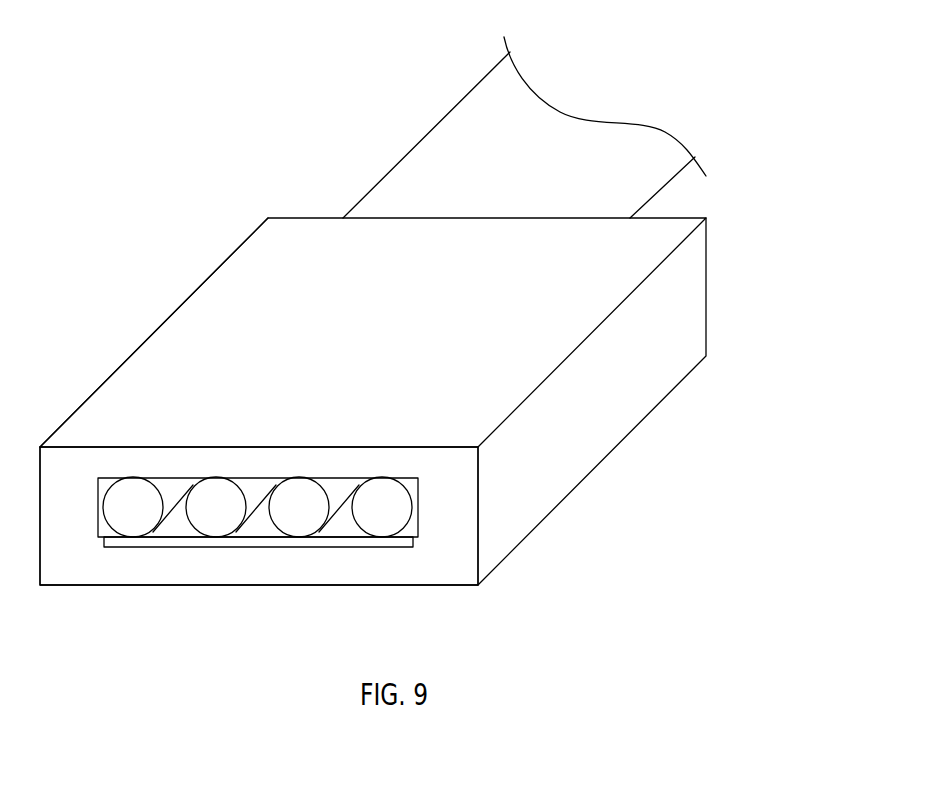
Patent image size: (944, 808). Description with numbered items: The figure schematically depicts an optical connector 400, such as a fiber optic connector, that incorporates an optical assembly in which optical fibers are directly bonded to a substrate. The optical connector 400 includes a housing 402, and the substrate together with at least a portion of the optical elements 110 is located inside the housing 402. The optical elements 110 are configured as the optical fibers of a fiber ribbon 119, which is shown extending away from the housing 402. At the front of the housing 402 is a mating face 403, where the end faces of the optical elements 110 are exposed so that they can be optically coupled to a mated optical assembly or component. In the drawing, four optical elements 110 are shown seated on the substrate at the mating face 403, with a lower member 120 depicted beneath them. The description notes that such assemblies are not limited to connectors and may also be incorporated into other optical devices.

The optical connector 400 is at (778, 353).
The housing 402 is at (233, 272).
The mating face 403 is at (453, 550).
The fiber ribbon 119 is at (361, 126).
The substrate / carrier 120 is at (368, 538).
The optical elements 110 is at (217, 478).